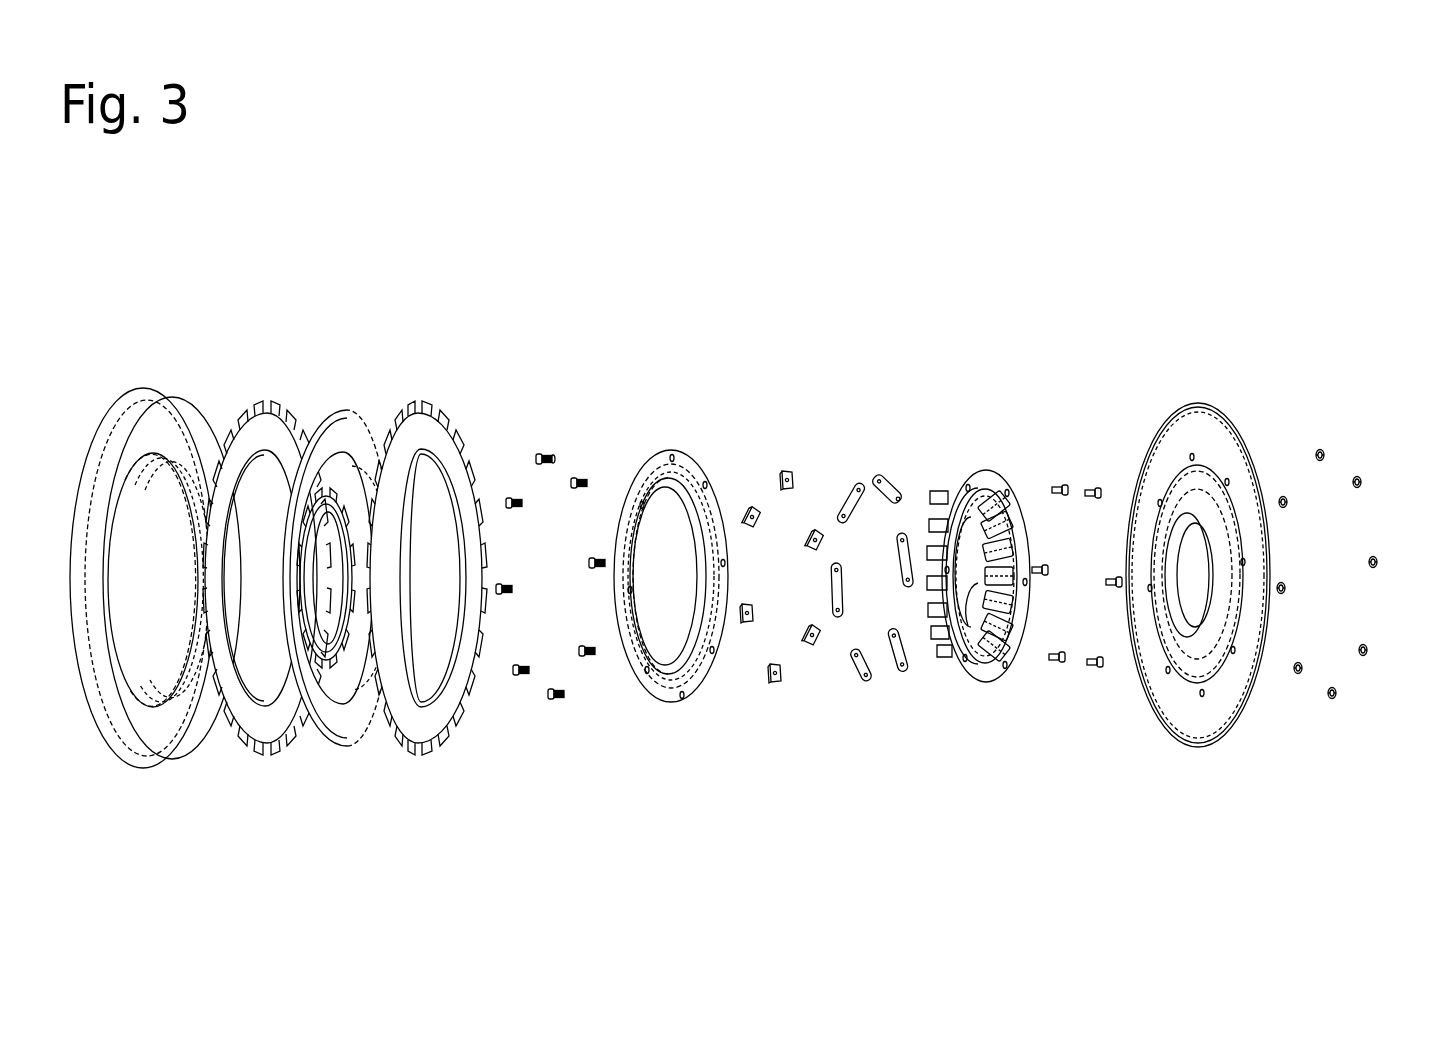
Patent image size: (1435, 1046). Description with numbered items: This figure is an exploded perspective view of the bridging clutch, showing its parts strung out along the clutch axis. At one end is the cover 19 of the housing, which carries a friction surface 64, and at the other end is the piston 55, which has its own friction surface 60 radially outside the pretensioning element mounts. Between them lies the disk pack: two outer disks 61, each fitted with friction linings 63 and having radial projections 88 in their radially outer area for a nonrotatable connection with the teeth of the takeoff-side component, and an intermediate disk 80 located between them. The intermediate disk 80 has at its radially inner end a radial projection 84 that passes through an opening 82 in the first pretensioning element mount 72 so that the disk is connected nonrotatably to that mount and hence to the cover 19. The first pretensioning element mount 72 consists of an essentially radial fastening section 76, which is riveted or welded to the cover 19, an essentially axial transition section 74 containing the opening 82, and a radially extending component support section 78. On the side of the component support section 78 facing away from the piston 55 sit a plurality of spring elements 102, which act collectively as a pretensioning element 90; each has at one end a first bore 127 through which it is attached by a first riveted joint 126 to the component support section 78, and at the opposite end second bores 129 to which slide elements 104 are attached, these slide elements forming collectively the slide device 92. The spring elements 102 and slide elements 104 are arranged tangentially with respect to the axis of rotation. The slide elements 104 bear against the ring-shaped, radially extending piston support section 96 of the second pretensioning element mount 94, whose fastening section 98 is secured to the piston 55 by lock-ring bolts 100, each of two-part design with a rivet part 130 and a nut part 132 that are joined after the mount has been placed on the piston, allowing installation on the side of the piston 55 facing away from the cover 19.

The cover 19 is at (165, 453).
The piston 55 is at (1198, 532).
The friction surface 60 is at (1155, 435).
The outer disk 61 is at (342, 498).
The friction lining 63 is at (278, 437).
The friction surface 64 is at (154, 526).
The first pretensioning element mount 72 is at (997, 566).
The transition section 74 is at (940, 650).
The fastening section 76 is at (975, 618).
The component support section 78 is at (958, 673).
The intermediate disk 80 is at (337, 559).
The opening 82 is at (930, 623).
The radial projection 84 is at (344, 655).
The radial projections 88 is at (238, 432).
The pretensioning element 90 is at (897, 497).
The slide device 92 is at (783, 475).
The second pretensioning element mount 94 is at (667, 483).
The piston support section 96 is at (665, 670).
The fastening section 98 is at (655, 554).
The lock-ring bolts 100 is at (542, 457).
The spring elements 102 is at (893, 648).
The slide elements 104 is at (777, 683).
The first riveted joint 126 is at (1095, 485).
The first bore 127 is at (903, 495).
The second bores 129 is at (889, 472).
The rivet part 130 is at (553, 458).
The nut part 132 is at (1327, 457).